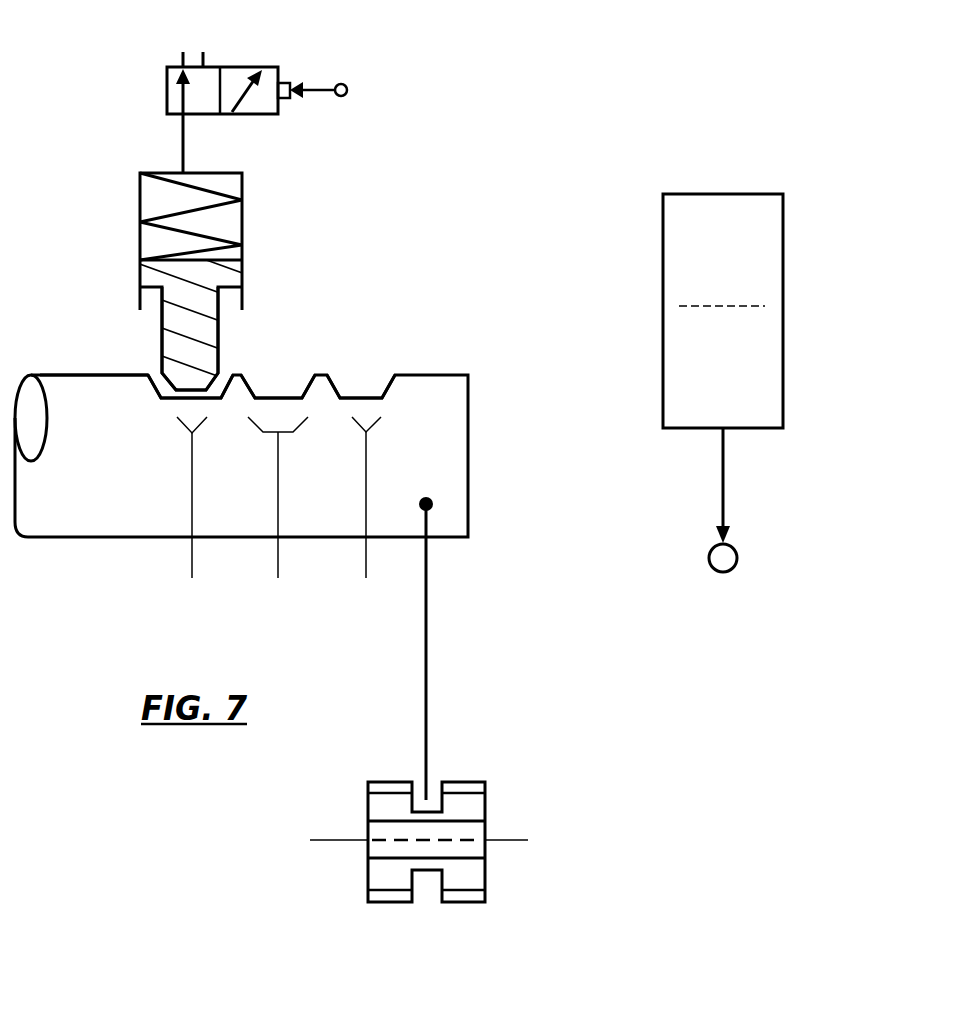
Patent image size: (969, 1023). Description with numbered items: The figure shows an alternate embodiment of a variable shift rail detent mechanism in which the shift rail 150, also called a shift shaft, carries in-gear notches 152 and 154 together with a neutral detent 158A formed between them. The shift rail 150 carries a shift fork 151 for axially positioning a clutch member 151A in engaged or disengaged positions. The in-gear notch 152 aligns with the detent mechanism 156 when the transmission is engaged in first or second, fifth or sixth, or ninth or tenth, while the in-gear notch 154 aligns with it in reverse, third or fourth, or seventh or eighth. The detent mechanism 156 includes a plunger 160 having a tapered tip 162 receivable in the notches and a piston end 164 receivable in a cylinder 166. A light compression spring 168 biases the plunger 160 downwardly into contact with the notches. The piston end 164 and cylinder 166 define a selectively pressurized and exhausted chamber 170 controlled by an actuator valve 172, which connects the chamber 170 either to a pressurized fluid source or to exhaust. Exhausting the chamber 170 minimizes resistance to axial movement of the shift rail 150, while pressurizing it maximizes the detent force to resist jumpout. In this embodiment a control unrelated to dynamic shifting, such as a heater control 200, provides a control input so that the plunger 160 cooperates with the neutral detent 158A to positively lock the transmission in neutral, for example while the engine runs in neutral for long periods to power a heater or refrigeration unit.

The shift rail 150 is at (148, 490).
The shift fork 151 is at (443, 671).
The clutch member 151A is at (470, 811).
The in-gear notch 152 is at (148, 380).
The in-gear notch 154 is at (366, 400).
The detent mechanism 156 is at (412, 213).
The neutral detent 158A is at (275, 388).
The plunger 160 is at (192, 335).
The tapered tip 162 is at (172, 380).
The piston end 164 is at (226, 269).
The cylinder 166 is at (138, 216).
The compression spring 168 is at (203, 187).
The chamber 170 is at (227, 229).
The actuator valve 172 is at (250, 49).
The heater control 200 is at (816, 293).